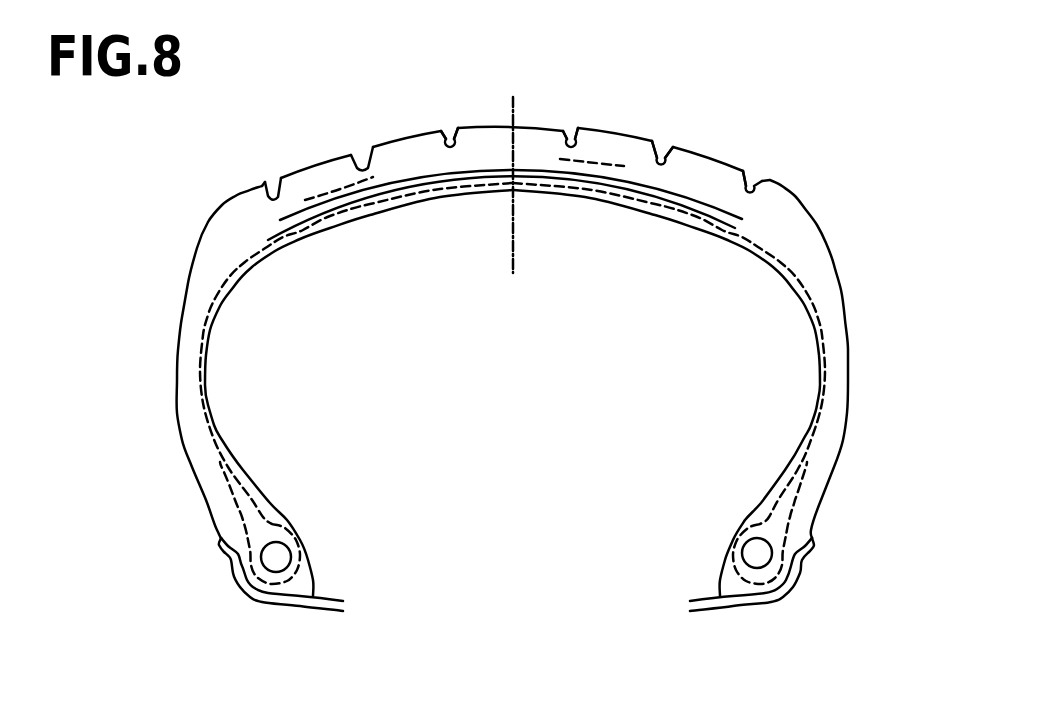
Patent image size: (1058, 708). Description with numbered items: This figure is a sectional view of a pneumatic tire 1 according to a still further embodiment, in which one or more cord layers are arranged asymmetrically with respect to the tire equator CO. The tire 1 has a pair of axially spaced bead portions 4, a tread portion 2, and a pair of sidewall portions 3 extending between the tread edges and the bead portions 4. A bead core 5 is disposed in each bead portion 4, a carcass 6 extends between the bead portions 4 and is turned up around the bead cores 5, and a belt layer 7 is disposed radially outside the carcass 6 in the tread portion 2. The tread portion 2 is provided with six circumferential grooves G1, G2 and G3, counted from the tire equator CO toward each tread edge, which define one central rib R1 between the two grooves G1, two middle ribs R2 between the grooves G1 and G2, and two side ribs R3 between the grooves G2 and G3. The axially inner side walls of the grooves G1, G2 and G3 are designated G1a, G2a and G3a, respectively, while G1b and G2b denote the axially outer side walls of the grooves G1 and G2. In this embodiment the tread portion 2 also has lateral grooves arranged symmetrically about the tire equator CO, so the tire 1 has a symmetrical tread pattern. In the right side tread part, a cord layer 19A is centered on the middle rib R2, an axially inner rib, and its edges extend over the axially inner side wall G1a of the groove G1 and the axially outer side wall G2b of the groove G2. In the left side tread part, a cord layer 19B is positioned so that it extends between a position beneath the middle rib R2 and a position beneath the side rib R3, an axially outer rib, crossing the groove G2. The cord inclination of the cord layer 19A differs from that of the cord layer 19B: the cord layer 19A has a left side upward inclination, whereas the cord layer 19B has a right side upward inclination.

The pneumatic tire 1 is at (840, 205).
The tread portion 2 is at (619, 115).
The sidewall portion 3 is at (860, 310).
The bead portion 4 is at (830, 515).
The bead core 5 is at (755, 537).
The carcass 6 is at (813, 433).
The belt layer 7 is at (731, 227).
The cord layer 19A is at (624, 166).
The cord layer 19B is at (373, 177).
The central rib R1 is at (527, 127).
The middle rib R2 is at (389, 138).
The side rib R3 is at (297, 165).
The circumferential groove G1 is at (458, 128).
The circumferential groove G2 is at (360, 162).
The circumferential groove G3 is at (268, 192).
The axially inner side wall of circumferential groove G1 G1a is at (453, 146).
The axially outer side wall of circumferential groove G1 G1b is at (445, 146).
The axially inner side wall of circumferential groove G2 G2a is at (659, 166).
The axially outer side wall of circumferential groove G2 G2b is at (670, 168).
The axially inner side wall of circumferential groove G3 G3a is at (746, 183).
The tire equator CO is at (513, 252).